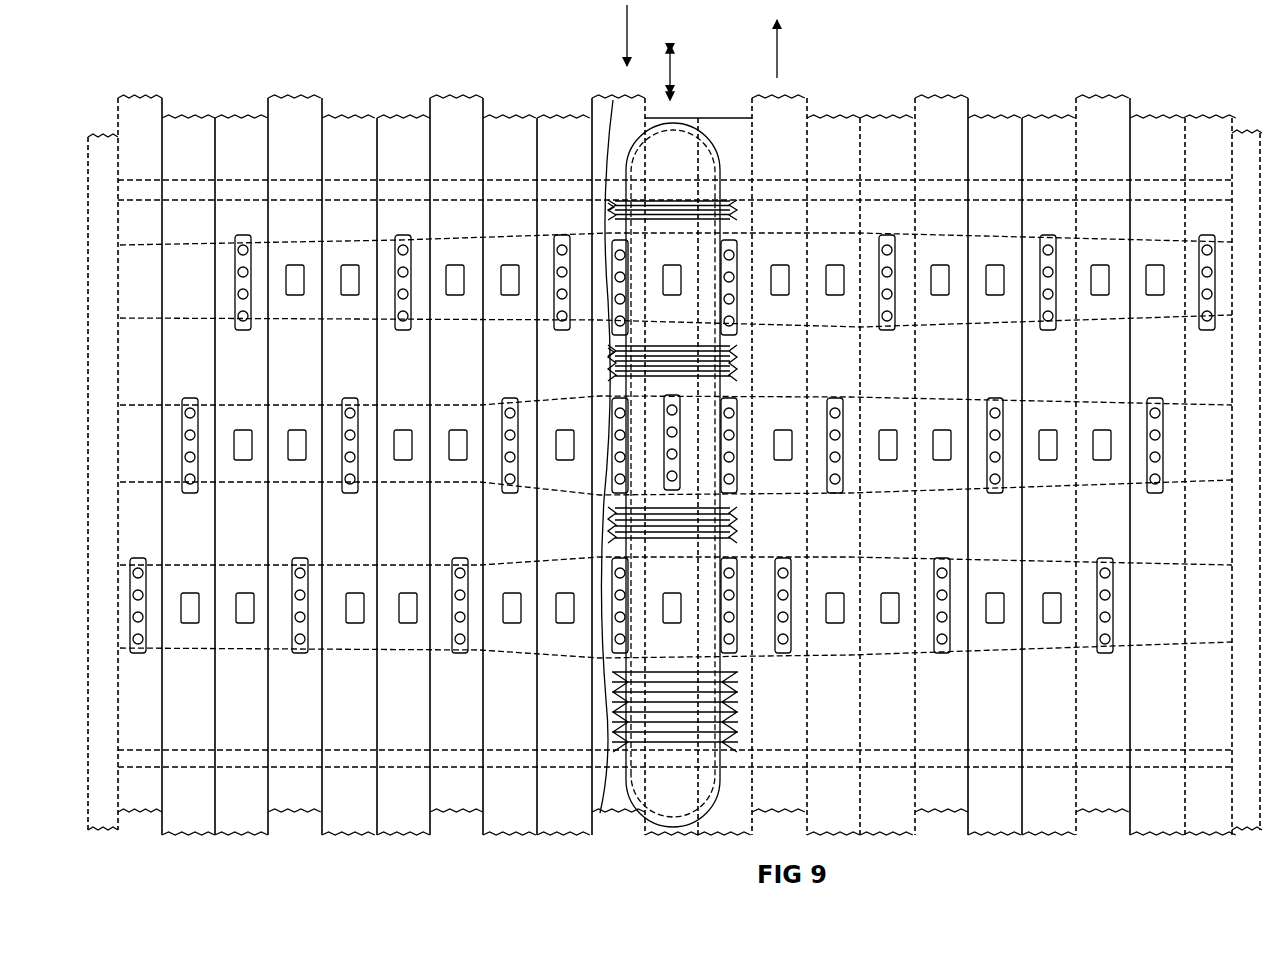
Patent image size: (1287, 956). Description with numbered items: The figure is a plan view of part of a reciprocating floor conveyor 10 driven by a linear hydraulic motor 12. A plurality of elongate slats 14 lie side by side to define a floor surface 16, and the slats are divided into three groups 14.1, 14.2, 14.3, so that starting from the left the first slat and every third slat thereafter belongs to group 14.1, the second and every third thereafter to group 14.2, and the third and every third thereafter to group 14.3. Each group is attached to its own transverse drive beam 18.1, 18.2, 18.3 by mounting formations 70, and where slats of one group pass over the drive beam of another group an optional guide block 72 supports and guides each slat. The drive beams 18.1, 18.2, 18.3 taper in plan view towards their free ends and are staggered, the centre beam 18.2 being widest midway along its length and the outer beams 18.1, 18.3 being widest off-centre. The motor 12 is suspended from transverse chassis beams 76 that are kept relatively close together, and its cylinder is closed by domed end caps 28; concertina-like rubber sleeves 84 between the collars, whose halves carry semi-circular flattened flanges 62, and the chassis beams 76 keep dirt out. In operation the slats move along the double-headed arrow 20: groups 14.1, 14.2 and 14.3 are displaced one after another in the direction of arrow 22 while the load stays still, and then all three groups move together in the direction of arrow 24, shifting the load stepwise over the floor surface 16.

The reciprocating floor conveyor 10 is at (1197, 107).
The linear hydraulic motor 12 is at (585, 690).
The slats 14 is at (1040, 143).
The first group of slats 14.1 is at (140, 140).
The second group of slats 14.2 is at (195, 790).
The third group of slats 14.3 is at (243, 157).
The floor surface 16 is at (1172, 168).
The transverse drive beam 18.1 is at (1001, 646).
The transverse drive beam 18.2 is at (1060, 484).
The transverse drive beam 18.3 is at (1110, 320).
The double-headed arrow 20 is at (674, 82).
The arrow 22 is at (624, 45).
The arrow 24 is at (782, 38).
The domed end caps 28 is at (680, 150).
The semi-circular flattened flange 62 is at (608, 212).
The mounting formations 70 is at (306, 655).
The guide block 72 is at (299, 428).
The transverse chassis beams 76 is at (888, 190).
The concertina-like rubber sleeves 84 is at (738, 208).